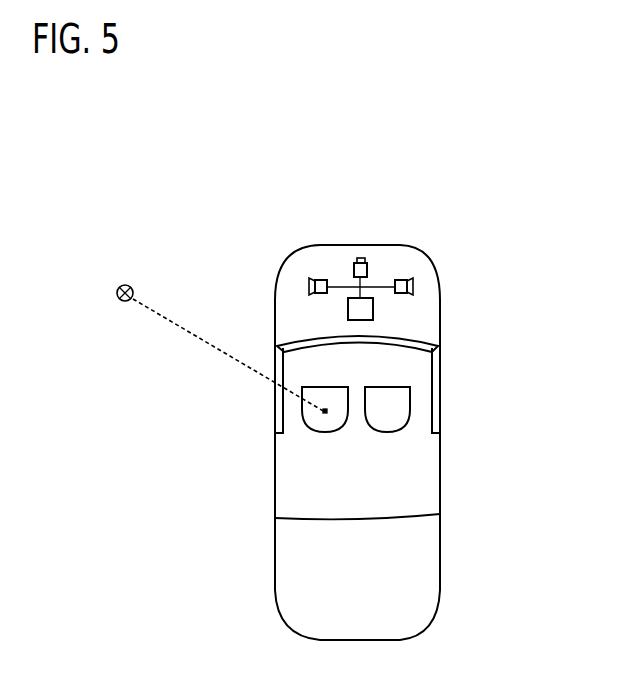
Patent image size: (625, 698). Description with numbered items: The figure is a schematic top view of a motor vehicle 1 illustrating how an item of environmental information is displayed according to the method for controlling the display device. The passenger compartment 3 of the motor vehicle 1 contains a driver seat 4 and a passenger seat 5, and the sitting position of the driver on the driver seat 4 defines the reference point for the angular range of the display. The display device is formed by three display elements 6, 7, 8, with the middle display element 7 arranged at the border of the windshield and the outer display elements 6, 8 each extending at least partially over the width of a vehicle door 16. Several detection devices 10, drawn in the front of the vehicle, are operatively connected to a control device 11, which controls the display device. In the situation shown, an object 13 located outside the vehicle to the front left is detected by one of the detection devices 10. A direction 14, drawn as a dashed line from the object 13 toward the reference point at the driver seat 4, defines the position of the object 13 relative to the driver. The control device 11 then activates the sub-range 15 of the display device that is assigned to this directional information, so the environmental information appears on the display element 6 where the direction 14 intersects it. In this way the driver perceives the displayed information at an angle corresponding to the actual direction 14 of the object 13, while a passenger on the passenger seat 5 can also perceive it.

The motor vehicle 1 is at (222, 187).
The passenger compartment 3 is at (296, 494).
The driver seat 4 is at (318, 432).
The passenger seat 5 is at (395, 432).
The display element 6 is at (276, 358).
The display element 7 is at (425, 340).
The display element 8 is at (441, 362).
The detection device 10 is at (318, 279).
The control device 11 is at (373, 309).
The object 13 is at (115, 295).
The direction 14 is at (176, 328).
The sub-range 15 is at (282, 390).
The vehicle door 16 is at (445, 380).